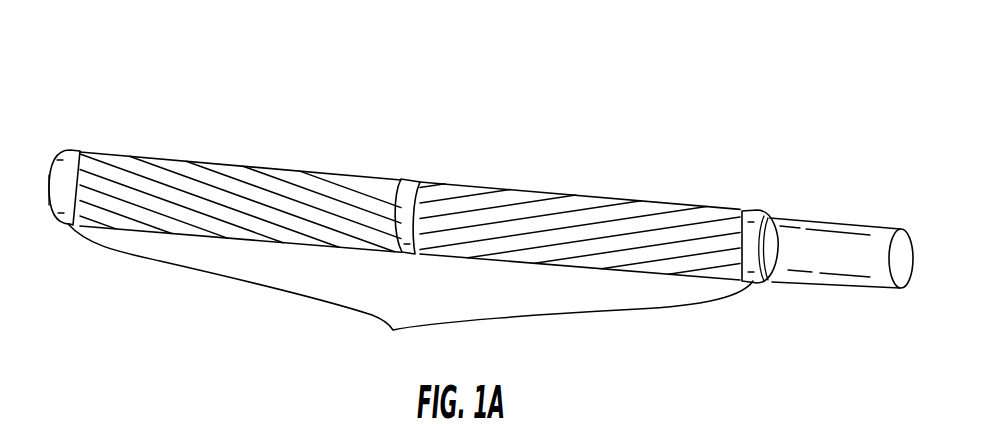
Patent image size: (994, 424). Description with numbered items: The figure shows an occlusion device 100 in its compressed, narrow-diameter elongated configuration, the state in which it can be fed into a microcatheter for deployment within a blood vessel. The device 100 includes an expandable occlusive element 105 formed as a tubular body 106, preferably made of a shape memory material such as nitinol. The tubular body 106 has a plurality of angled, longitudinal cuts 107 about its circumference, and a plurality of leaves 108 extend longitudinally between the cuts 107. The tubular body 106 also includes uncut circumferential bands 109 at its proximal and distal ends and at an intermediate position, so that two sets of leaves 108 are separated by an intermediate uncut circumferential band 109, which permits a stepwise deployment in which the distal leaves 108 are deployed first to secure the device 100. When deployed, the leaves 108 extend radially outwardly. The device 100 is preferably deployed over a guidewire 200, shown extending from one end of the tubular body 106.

The occlusion device 100 is at (96, 74).
The expandable occlusive element 105 is at (63, 262).
The tubular body 106 is at (78, 265).
The angled longitudinal cuts 107 is at (348, 182).
The leaves 108 is at (537, 213).
The uncut circumferential band 109 is at (407, 246).
The guidewire 200 is at (824, 203).